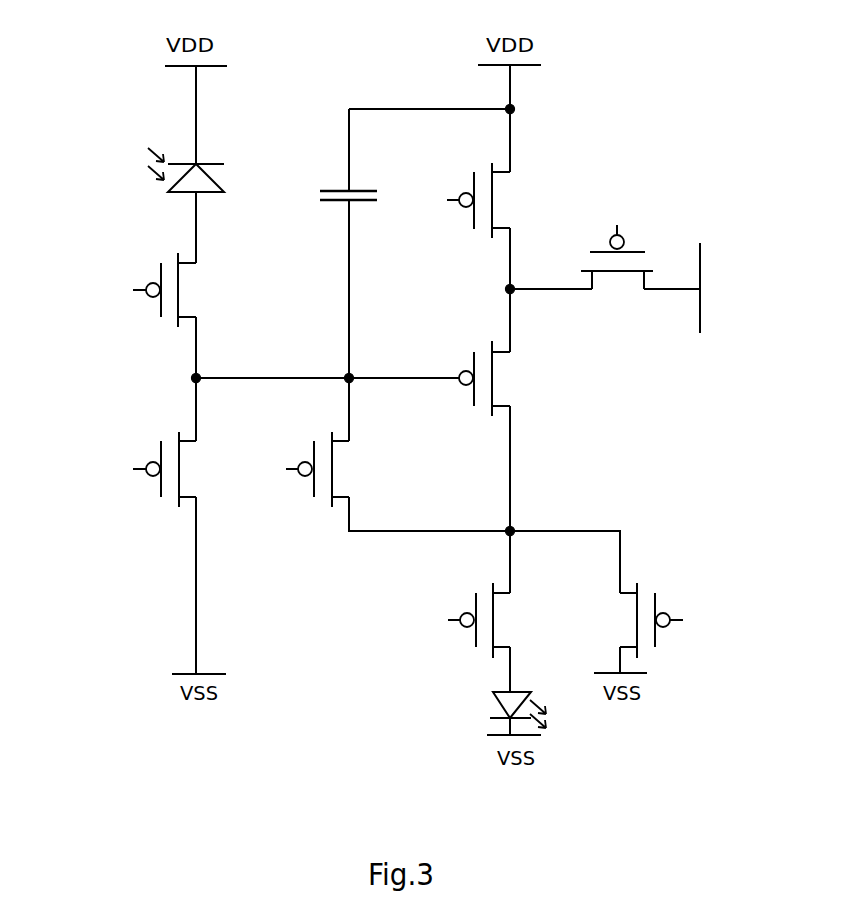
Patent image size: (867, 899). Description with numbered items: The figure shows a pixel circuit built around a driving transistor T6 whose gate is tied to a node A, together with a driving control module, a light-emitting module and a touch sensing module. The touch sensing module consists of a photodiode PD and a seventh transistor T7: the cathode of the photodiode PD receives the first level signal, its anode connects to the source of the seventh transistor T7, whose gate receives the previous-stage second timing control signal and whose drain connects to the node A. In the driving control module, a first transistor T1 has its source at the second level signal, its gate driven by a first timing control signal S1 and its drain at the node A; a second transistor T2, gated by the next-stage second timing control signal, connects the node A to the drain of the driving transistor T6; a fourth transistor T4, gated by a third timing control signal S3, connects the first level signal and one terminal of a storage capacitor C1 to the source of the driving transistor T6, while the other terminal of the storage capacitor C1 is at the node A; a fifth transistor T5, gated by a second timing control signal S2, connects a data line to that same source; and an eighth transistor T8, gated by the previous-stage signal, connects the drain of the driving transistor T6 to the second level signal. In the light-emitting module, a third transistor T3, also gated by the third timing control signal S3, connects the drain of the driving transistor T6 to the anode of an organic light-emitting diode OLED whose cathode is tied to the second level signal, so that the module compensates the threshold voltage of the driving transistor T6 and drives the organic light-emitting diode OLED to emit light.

The first transistor T1 is at (179, 469).
The second transistor T2 is at (335, 469).
The third transistor T3 is at (494, 620).
The fourth transistor T4 is at (494, 200).
The fifth transistor T5 is at (640, 279).
The driving transistor T6 is at (500, 378).
The seventh transistor T7 is at (179, 290).
The eighth transistor T8 is at (633, 620).
The storage capacitor C1 is at (338, 213).
The photodiode PD is at (205, 171).
The organic light-emitting diode OLED is at (485, 710).
The node A is at (335, 359).
The first timing control signal S1 is at (129, 488).
The second timing control signal S2 is at (617, 216).
The third timing control signal S3 is at (437, 416).
The element data line is at (704, 312).